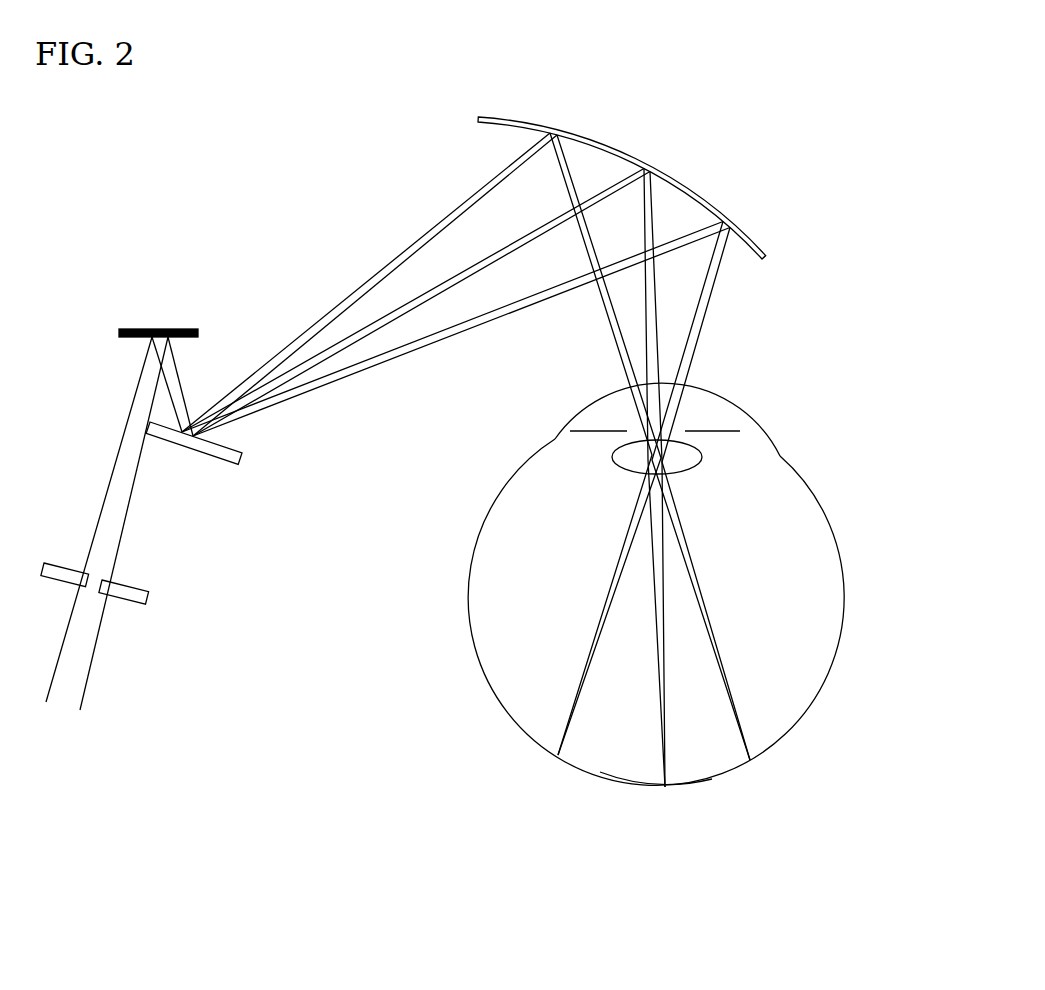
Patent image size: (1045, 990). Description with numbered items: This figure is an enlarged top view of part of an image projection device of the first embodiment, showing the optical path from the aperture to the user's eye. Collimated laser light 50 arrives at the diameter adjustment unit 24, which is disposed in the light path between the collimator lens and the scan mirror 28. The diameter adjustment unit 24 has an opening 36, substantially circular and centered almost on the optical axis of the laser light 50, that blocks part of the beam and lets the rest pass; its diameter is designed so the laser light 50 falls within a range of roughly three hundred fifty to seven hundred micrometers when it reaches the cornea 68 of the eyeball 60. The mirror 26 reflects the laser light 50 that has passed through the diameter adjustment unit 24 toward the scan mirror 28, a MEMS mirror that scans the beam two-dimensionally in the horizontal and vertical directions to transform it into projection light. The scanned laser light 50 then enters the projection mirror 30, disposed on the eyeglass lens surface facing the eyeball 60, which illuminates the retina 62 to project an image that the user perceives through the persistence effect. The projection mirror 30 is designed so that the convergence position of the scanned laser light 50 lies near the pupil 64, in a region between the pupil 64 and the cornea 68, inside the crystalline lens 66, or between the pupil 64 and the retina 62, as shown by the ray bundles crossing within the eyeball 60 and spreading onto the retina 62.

The diameter adjustment unit 24 is at (148, 600).
The mirror 26 is at (183, 329).
The scan mirror 28 is at (243, 456).
The projection mirror 30 is at (700, 196).
The opening 36 is at (95, 583).
The laser light 50 is at (86, 650).
The eyeball 60 is at (848, 603).
The retina 62 is at (689, 787).
The pupil 64 is at (683, 432).
The crystalline lens 66 is at (703, 457).
The cornea 68 is at (616, 396).